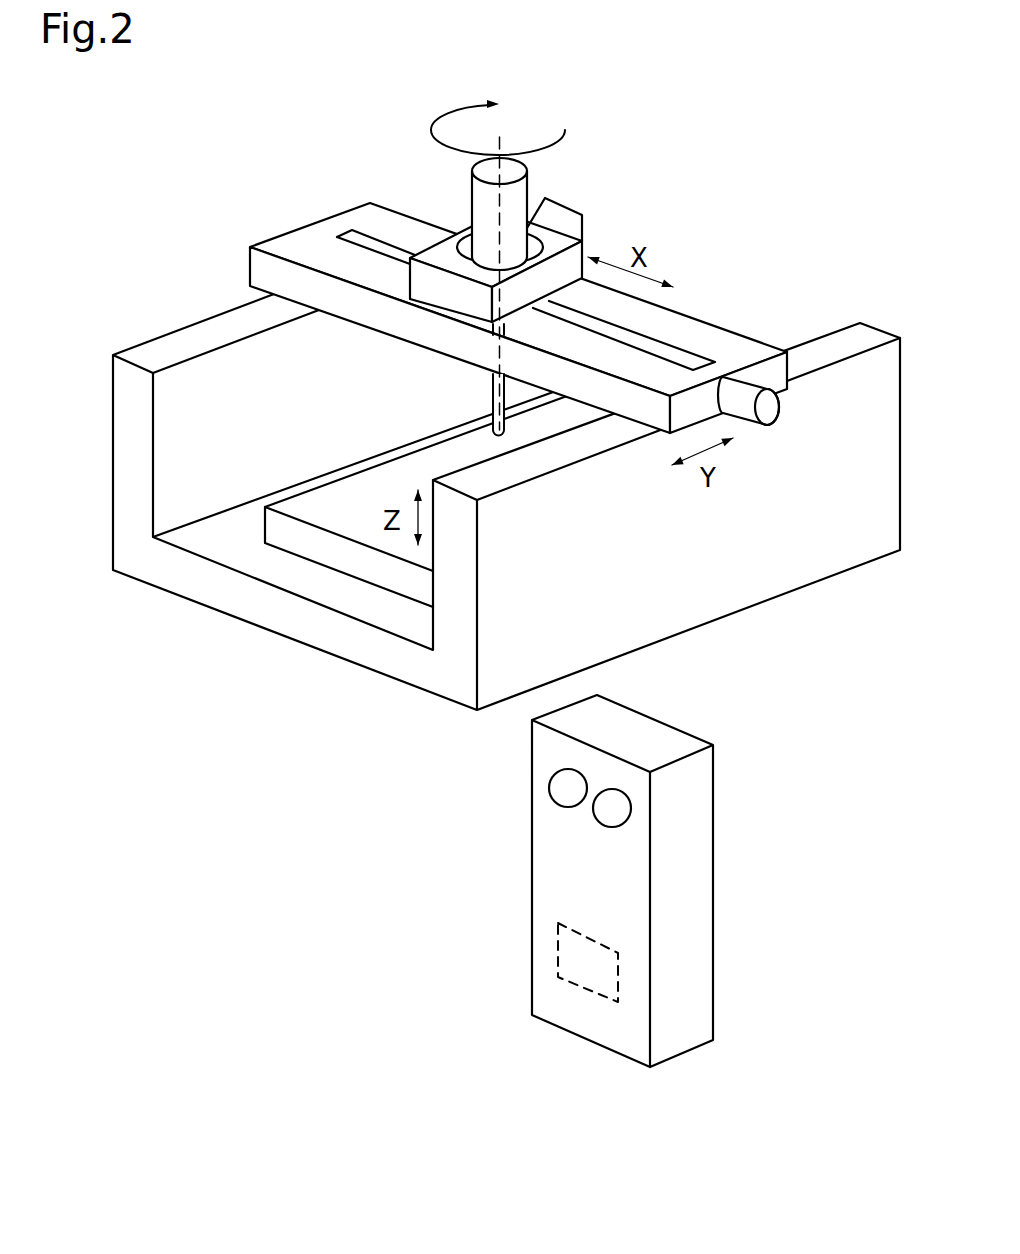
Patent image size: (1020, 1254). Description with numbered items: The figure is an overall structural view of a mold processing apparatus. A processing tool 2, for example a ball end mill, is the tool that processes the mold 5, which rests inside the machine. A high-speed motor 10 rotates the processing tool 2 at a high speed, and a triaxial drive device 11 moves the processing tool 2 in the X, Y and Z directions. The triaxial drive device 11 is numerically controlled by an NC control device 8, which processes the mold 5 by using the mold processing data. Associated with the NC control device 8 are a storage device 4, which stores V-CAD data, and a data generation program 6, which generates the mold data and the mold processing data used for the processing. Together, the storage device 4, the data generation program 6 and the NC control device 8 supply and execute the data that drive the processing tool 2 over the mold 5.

The processing tool 2 is at (508, 423).
The storage device 4 is at (507, 981).
The mold 5 is at (322, 503).
The data generation program 6 is at (567, 963).
The NC control device 8 is at (547, 892).
The high-speed motor 10 is at (518, 213).
The triaxial drive device 11 is at (722, 565).